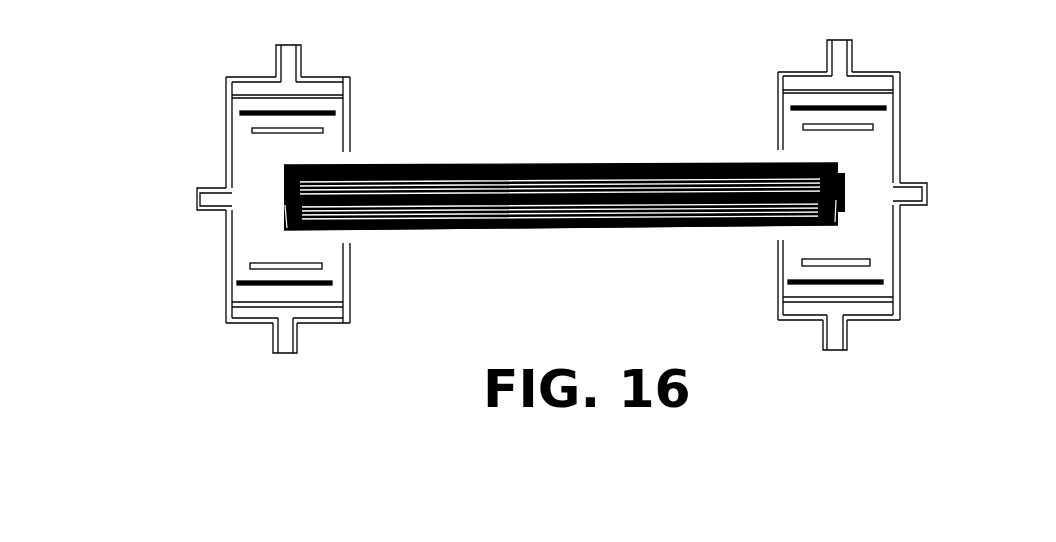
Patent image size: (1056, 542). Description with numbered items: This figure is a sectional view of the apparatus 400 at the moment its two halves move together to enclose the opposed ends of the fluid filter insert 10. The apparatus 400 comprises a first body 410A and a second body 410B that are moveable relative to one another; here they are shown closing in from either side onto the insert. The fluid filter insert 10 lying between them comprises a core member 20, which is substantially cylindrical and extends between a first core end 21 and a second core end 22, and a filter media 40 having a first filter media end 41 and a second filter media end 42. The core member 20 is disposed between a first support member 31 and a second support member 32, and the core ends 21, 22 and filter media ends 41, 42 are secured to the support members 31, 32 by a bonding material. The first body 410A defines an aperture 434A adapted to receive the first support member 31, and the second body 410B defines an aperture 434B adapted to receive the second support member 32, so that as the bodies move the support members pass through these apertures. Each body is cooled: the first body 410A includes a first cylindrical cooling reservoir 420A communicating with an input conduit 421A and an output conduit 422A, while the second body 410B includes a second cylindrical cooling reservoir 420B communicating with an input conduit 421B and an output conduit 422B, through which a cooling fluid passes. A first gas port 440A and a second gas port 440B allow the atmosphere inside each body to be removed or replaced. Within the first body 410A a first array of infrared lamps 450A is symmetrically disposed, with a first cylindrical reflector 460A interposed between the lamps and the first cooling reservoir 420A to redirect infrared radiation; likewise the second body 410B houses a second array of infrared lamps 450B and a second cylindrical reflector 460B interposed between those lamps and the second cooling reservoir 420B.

The apparatus 400 is at (910, 46).
The first body 410A is at (227, 128).
The second body 410B is at (898, 123).
The first cylindrical cooling reservoir 420A is at (327, 90).
The second cylindrical cooling reservoir 420B is at (800, 86).
The input conduit 421A is at (288, 45).
The input conduit 421B is at (839, 40).
The output conduit 422A is at (286, 357).
The output conduit 422B is at (833, 353).
The aperture 434A is at (348, 162).
The aperture 434B is at (778, 160).
The first gas port 440A is at (202, 178).
The second gas port 440B is at (917, 178).
The first array of infrared lamps 450A is at (260, 263).
The second array of infrared lamps 450B is at (883, 282).
The first cylindrical reflector 460A is at (325, 278).
The second cylindrical reflector 460B is at (793, 282).
The fluid filter insert 10 is at (515, 230).
The core member 20 is at (562, 230).
The filter media 40 is at (611, 230).
The first core end 21 is at (392, 230).
The second core end 22 is at (732, 226).
The first support member 31 is at (300, 230).
The second support member 32 is at (818, 230).
The first filter media end 41 is at (340, 230).
The second filter media end 42 is at (783, 228).